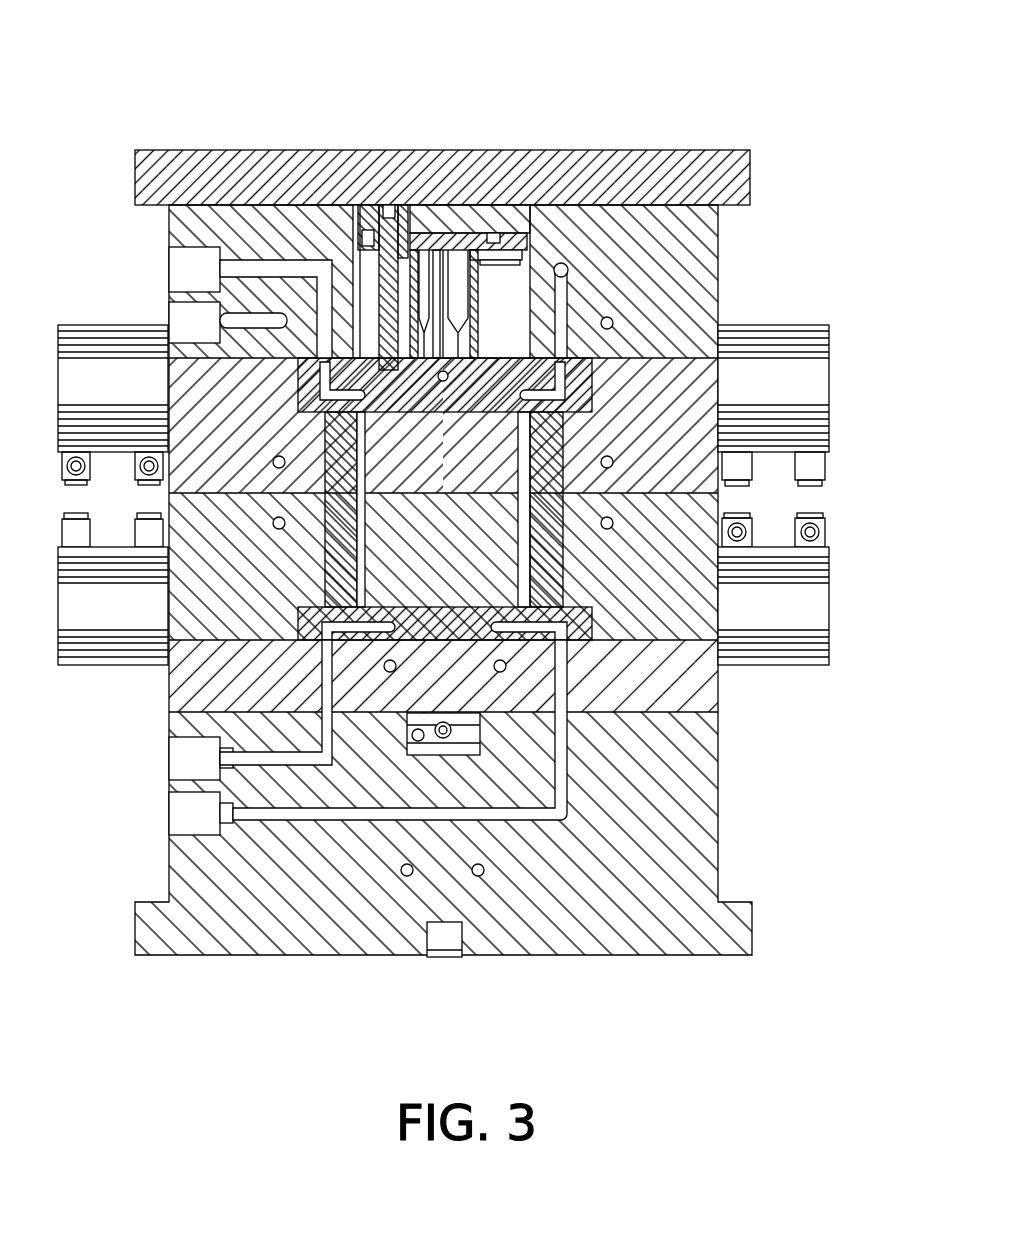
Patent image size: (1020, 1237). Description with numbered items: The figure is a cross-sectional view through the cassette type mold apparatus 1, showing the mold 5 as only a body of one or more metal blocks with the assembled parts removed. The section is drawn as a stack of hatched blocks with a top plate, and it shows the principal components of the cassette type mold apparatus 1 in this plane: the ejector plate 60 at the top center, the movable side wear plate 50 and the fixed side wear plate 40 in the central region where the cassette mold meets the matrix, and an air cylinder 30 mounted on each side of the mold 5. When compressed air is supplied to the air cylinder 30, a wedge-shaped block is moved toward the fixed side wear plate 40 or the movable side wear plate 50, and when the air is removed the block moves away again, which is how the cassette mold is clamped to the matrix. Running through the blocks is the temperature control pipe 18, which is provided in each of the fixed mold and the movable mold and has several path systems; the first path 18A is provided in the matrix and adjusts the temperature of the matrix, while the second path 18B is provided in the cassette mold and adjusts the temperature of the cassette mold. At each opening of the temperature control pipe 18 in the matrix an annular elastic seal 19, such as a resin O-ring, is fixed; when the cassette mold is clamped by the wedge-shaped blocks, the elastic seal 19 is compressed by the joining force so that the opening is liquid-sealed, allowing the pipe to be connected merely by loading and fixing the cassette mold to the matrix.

The cassette type mold apparatus 1 is at (645, 104).
The mold 5 is at (739, 270).
The temperature control pipe 18 is at (204, 560).
The first path 18A is at (262, 320).
The second path 18B is at (337, 812).
The elastic seal 19 is at (566, 648).
The air cylinder 30 is at (825, 388).
The fixed side wear plate 40 is at (578, 649).
The movable side wear plate 50 is at (372, 363).
The ejector plate 60 is at (465, 205).